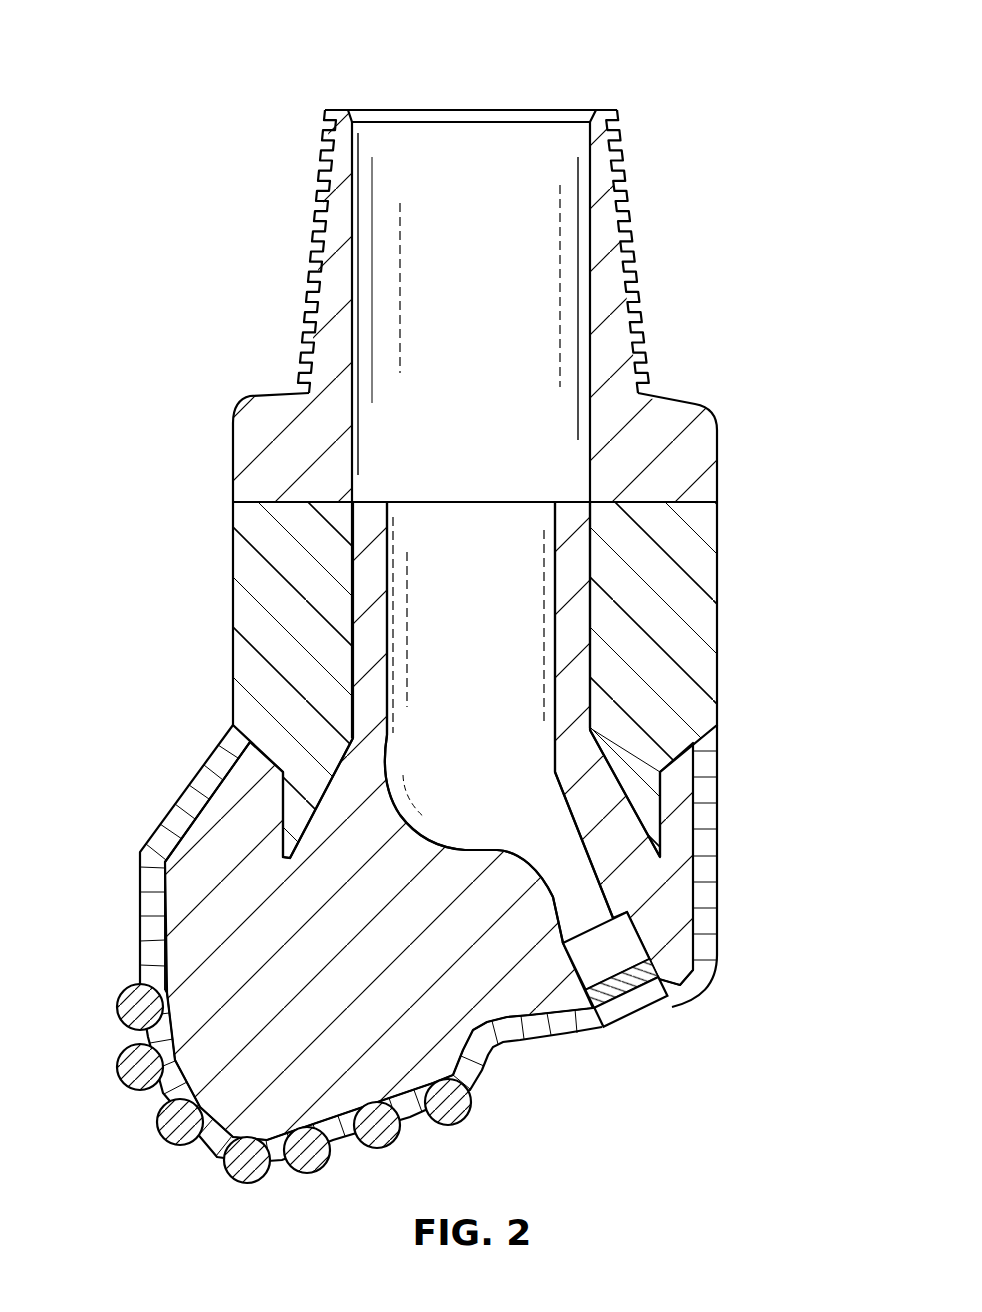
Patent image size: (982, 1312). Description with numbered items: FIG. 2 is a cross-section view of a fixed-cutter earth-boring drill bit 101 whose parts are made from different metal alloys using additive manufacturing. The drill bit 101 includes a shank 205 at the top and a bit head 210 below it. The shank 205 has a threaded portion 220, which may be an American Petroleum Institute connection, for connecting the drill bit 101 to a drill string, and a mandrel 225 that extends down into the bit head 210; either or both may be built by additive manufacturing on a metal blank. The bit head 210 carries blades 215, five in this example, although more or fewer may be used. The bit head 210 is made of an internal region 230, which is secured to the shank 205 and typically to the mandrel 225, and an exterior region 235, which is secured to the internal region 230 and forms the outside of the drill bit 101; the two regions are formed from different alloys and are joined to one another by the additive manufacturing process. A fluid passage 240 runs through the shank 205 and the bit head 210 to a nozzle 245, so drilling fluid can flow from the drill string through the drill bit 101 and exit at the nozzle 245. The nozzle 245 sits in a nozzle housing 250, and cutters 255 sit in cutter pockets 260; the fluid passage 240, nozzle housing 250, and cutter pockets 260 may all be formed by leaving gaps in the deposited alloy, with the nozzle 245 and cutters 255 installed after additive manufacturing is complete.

The drill bit 101 is at (240, 65).
The shank 205 is at (745, 447).
The bit head 210 is at (749, 856).
The blade 215 is at (126, 946).
The threaded portion 220 is at (312, 270).
The mandrel 225 is at (240, 614).
The internal region 230 is at (171, 905).
The exterior region 235 is at (197, 790).
The fluid passage 240 is at (448, 331).
The nozzle 245 is at (634, 988).
The nozzle housing 250 is at (622, 1030).
The cutter 255 is at (121, 1068).
The cutter pocket 260 is at (425, 1115).